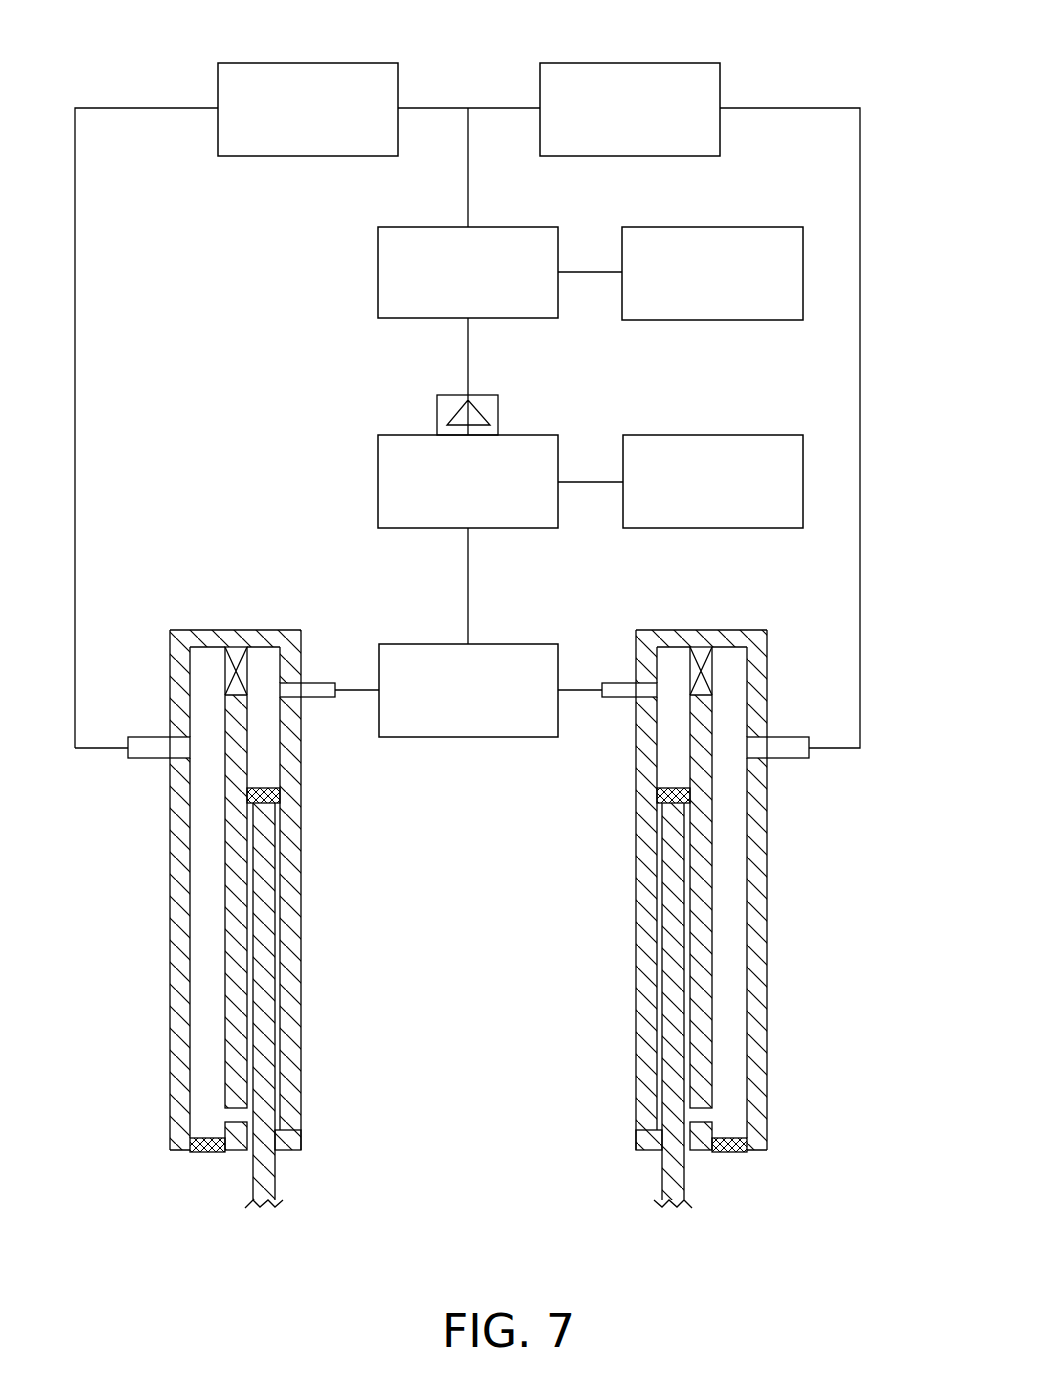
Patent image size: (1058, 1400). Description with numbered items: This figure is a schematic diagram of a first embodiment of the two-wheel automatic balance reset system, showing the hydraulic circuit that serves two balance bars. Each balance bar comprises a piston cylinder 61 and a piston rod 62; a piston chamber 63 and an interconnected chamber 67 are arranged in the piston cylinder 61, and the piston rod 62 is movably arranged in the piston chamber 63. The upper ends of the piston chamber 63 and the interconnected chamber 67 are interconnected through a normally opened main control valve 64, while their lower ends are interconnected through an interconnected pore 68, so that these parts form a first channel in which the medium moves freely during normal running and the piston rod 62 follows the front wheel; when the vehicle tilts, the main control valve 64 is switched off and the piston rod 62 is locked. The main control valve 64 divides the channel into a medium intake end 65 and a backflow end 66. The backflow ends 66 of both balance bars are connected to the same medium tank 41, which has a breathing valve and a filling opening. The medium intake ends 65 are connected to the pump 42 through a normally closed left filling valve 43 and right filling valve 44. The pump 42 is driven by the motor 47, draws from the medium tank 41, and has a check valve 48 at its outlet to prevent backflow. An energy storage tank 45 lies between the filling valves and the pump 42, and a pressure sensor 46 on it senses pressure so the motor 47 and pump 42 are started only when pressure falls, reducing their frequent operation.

The medium tank 41 is at (437, 660).
The pump 42 is at (405, 478).
The left filling valve 43 is at (218, 68).
The right filling valve 44 is at (712, 80).
The energy storage tank 45 is at (378, 260).
The pressure sensor 46 is at (797, 265).
The motor 47 is at (805, 508).
The check valve 48 is at (480, 412).
The piston cylinder 61 is at (302, 880).
The piston rod 62 is at (277, 1165).
The piston chamber 63 is at (265, 663).
The main control valve 64 is at (243, 673).
The medium intake end 65 is at (157, 758).
The backflow end 66 is at (320, 700).
The interconnected chamber 67 is at (205, 668).
The interconnected pore 68 is at (228, 1114).